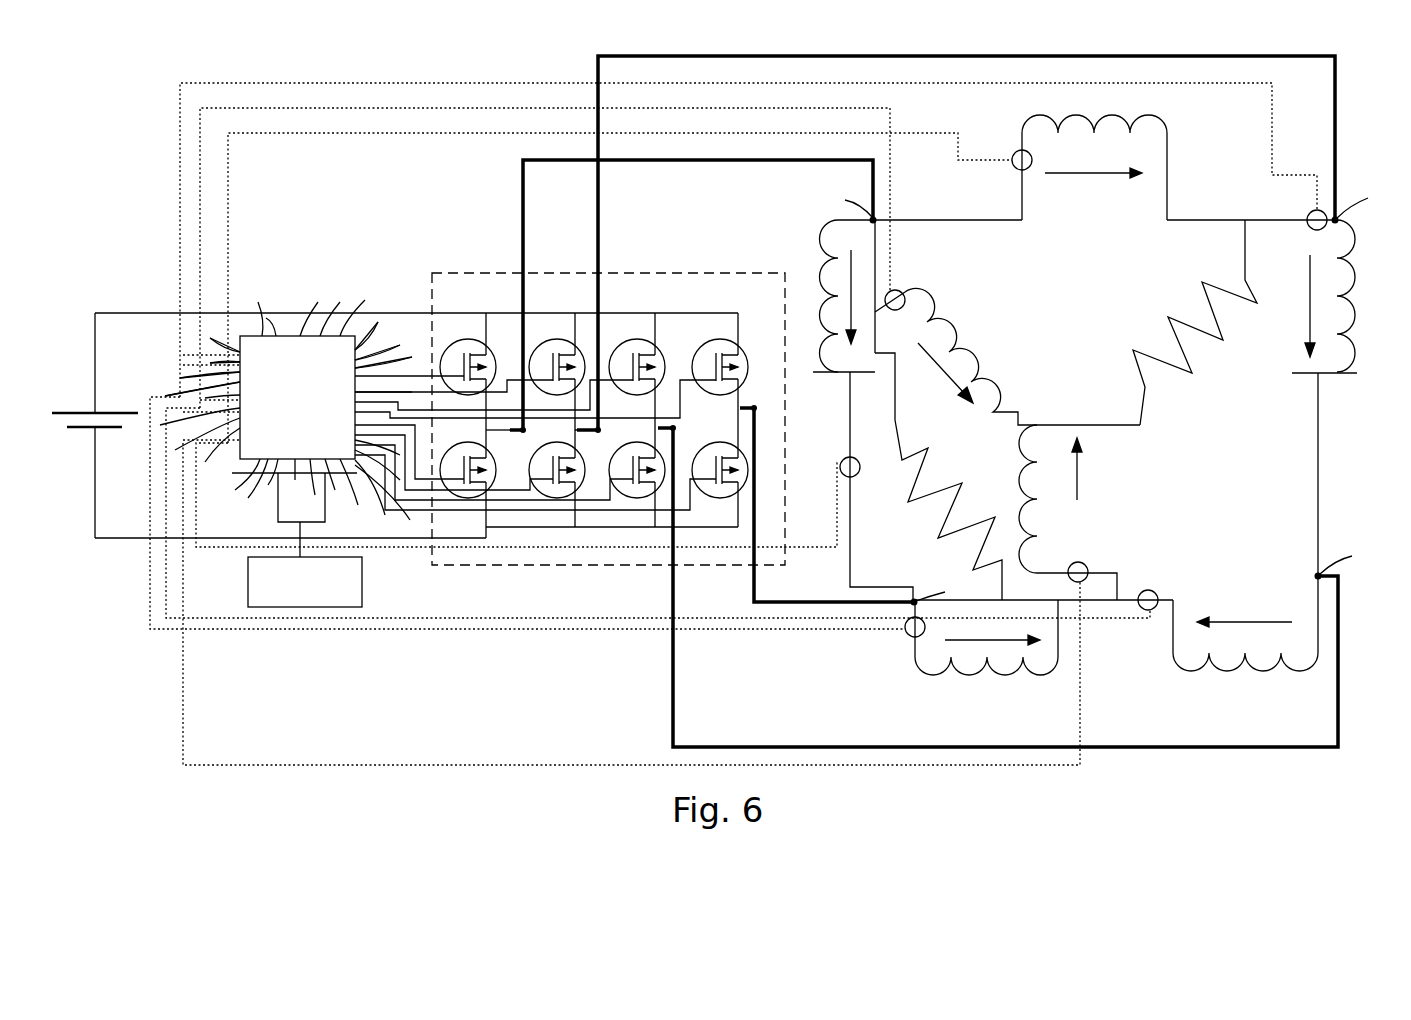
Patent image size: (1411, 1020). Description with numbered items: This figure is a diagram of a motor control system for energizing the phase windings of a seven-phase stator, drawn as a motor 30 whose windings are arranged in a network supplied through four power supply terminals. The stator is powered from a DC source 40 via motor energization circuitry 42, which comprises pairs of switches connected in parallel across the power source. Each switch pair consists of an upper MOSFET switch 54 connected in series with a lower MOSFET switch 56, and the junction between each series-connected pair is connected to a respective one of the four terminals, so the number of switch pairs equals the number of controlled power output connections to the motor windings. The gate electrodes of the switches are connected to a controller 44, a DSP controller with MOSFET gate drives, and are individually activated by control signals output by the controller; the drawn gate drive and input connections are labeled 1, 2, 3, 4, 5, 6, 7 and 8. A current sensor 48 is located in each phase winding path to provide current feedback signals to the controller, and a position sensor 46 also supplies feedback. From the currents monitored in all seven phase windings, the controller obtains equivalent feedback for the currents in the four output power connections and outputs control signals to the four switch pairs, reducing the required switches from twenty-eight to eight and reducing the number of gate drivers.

The motor 30 is at (1230, 489).
The DC source 40 is at (80, 412).
The motor energization circuitry 42 is at (472, 272).
The controller 44 is at (320, 336).
The position sensor 46 is at (362, 580).
The current sensor 48 is at (1030, 170).
The upper MOSFET switch 54 is at (748, 362).
The lower MOSFET switch 56 is at (748, 472).
The controller input line 1 is at (196, 384).
The controller input line 2 is at (202, 408).
The controller input line 3 is at (200, 422).
The controller input line 4 is at (180, 397).
The gate drive line 5 is at (385, 390).
The gate drive line 6 is at (385, 414).
The gate drive line 7 is at (391, 441).
The gate drive line 8 is at (392, 460).